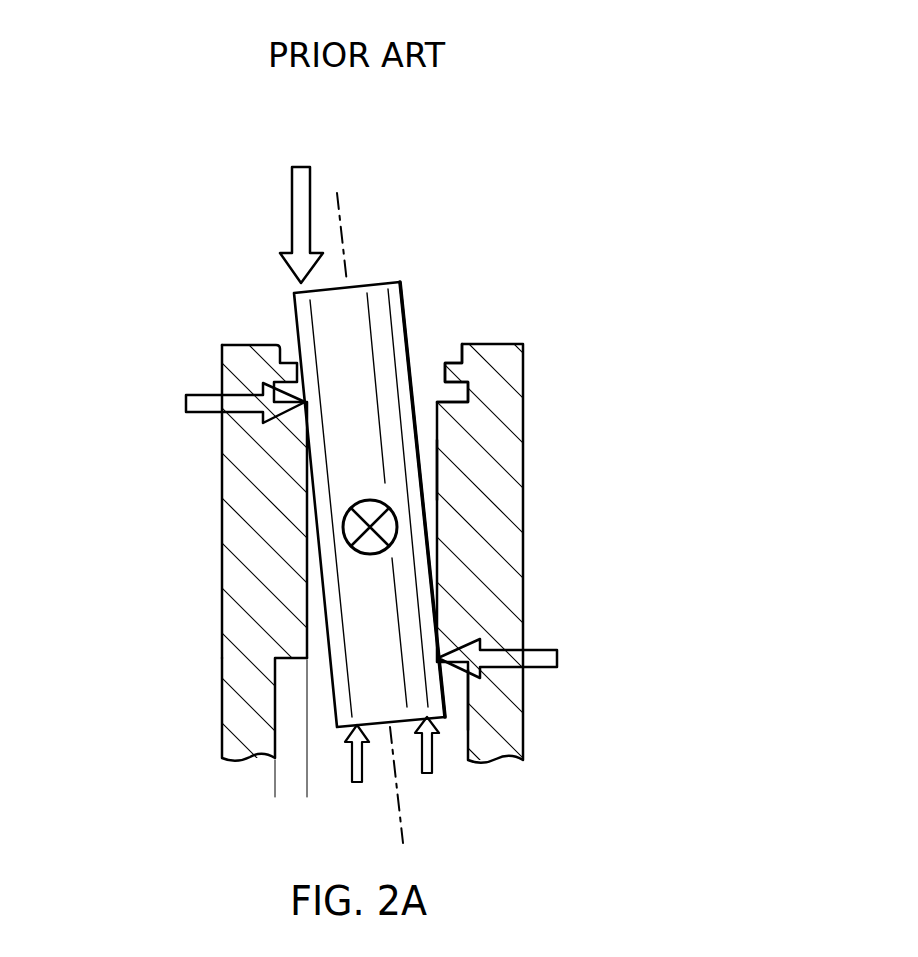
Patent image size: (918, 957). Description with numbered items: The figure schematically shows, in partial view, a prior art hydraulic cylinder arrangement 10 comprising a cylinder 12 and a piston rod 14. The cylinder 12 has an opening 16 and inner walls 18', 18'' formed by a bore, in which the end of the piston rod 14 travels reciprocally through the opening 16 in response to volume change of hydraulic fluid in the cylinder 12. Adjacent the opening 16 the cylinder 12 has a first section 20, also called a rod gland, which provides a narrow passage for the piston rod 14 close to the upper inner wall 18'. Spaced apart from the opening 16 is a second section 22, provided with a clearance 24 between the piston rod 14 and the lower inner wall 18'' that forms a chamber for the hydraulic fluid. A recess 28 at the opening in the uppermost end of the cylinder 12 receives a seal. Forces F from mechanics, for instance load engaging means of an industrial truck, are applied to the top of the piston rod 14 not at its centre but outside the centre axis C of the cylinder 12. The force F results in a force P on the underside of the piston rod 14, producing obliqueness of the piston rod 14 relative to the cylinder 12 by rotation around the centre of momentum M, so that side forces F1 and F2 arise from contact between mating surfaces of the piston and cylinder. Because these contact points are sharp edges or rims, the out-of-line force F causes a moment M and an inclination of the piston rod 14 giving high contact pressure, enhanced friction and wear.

The hydraulic cylinder arrangement 10 is at (509, 191).
The cylinder 12 is at (507, 358).
The piston rod 14 is at (356, 390).
The opening 16 is at (447, 310).
The upper inner wall 18' is at (467, 470).
The lower inner wall 18'' is at (523, 700).
The first section 20 is at (222, 345).
The second section 22 is at (275, 660).
The clearance 24 is at (340, 787).
The recess 28 is at (458, 392).
The centre axis C is at (346, 247).
The force F is at (301, 206).
The side force F1 is at (222, 403).
The side force F2 is at (519, 658).
The centre of momentum M is at (368, 529).
The force P is at (392, 767).